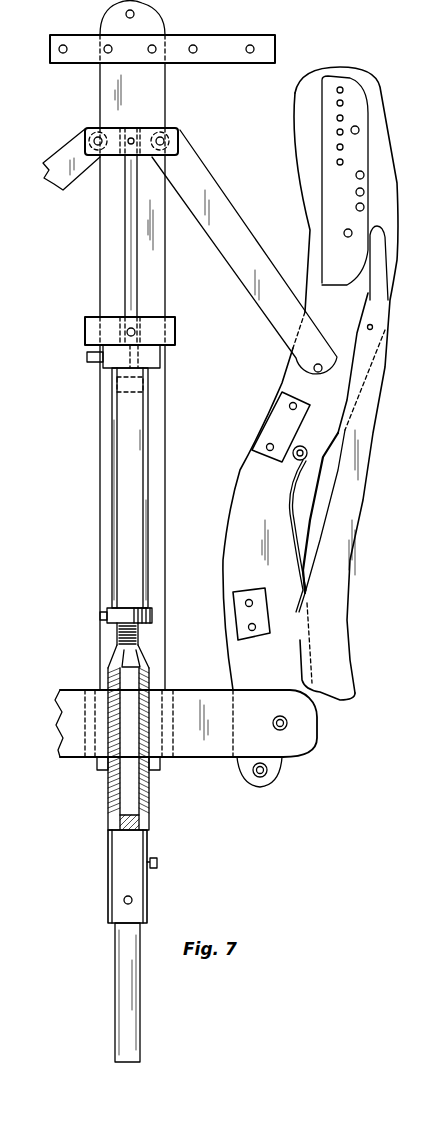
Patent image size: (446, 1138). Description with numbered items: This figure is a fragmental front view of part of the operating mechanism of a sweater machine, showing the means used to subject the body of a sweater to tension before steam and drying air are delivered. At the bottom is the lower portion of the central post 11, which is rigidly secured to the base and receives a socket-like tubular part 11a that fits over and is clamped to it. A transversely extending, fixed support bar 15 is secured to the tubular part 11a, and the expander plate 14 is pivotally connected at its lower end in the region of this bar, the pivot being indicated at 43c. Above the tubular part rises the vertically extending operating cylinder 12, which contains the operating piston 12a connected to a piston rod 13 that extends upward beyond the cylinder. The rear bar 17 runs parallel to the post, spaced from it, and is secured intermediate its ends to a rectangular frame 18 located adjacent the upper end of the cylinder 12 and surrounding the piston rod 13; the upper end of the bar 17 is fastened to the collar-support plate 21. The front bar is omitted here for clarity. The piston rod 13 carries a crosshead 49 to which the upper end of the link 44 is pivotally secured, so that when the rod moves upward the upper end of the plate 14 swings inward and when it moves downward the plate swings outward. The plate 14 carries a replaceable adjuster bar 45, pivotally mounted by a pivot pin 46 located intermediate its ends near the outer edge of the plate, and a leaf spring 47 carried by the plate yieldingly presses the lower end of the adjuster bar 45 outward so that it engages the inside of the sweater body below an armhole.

The central post 11 is at (113, 955).
The tubular part 11a is at (108, 792).
The operating cylinder 12 is at (112, 463).
The operating piston 12a is at (117, 385).
The piston rod 13 is at (138, 265).
The expander plate 14 is at (397, 200).
The support bar 15 is at (205, 750).
The rear bar 17 is at (100, 90).
The rectangular frame 18 is at (178, 331).
The collar-support plate 21 is at (215, 64).
The pivot pin 43c is at (286, 729).
The link 44 is at (68, 190).
The adjuster bar 45 is at (363, 508).
The pivot pin 46 is at (373, 327).
The leaf spring 47 is at (290, 506).
The crosshead 49 is at (180, 131).